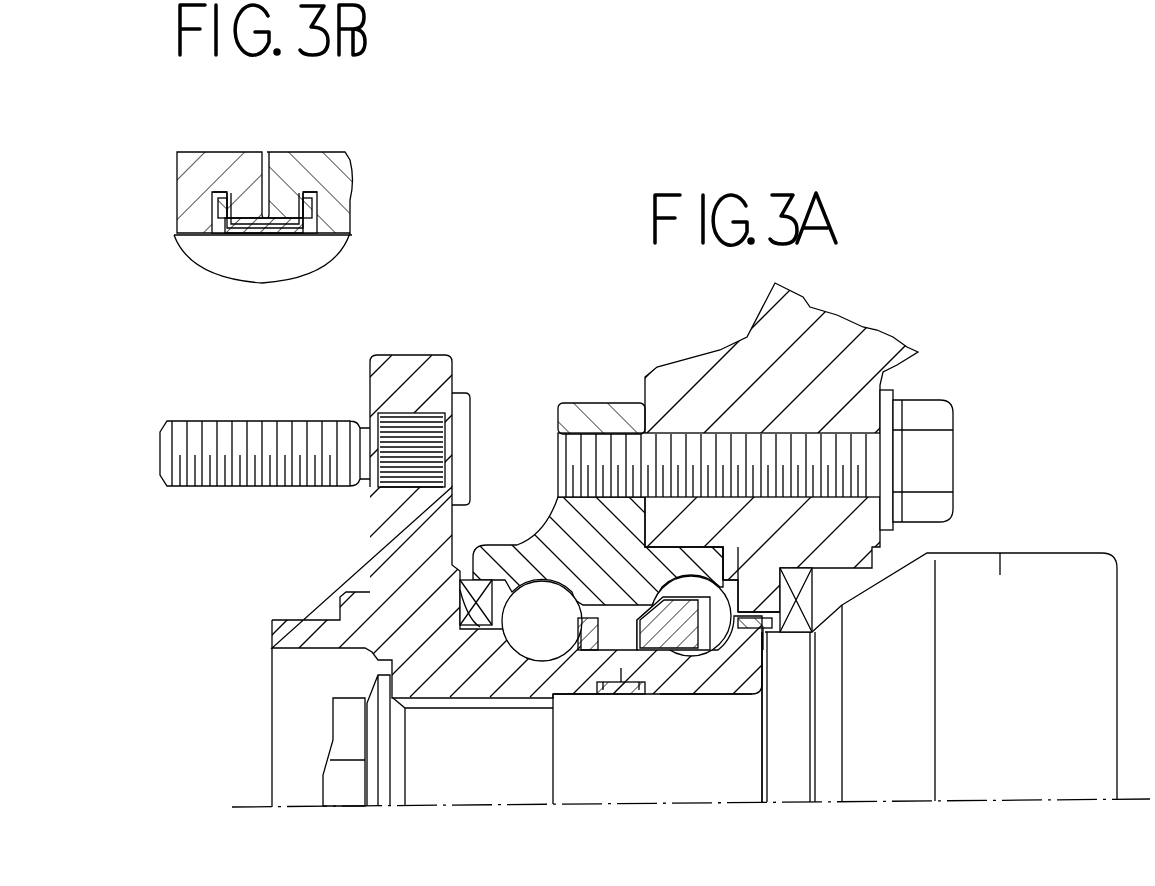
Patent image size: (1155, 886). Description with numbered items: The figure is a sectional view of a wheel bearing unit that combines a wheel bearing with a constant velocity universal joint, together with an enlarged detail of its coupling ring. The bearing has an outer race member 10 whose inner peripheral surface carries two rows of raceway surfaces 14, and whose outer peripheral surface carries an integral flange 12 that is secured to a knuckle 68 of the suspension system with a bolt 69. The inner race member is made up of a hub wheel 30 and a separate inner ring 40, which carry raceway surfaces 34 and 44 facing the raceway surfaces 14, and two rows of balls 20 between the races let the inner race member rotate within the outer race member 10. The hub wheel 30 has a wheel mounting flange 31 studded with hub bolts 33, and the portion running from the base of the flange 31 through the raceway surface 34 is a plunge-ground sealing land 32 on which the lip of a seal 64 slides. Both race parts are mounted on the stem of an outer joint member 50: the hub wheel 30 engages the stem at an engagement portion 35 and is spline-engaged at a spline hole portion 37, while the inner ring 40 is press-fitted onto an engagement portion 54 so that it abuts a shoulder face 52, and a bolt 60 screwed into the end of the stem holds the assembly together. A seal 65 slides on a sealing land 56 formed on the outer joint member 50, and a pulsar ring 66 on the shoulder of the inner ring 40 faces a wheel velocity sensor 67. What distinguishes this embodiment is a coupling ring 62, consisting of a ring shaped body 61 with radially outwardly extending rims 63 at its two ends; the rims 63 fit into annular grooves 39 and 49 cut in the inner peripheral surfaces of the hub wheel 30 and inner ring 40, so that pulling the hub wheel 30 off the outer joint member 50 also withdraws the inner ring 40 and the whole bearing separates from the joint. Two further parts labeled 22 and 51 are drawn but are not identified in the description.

In FIG. 3A, the outer race member 10 is at (530, 530).
In FIG. 3A, the flange 12 is at (590, 405).
In FIG. 3A, the raceway surfaces 14 is at (630, 560).
In FIG. 3A, the balls 20 is at (560, 638).
In FIG. 3A, the spacer ring 22 is at (637, 630).
In FIG. 3A, the hub wheel 30 is at (268, 630).
In FIG. 3B, the hub wheel 30 is at (218, 152).
In FIG. 3A, the wheel mounting flange 31 is at (422, 358).
In FIG. 3A, the sealing land 32 is at (463, 627).
In FIG. 3A, the hub bolts 33 is at (267, 430).
In FIG. 3A, the raceway surface 34 is at (440, 697).
In FIG. 3A, the engagement portion 35 is at (580, 697).
In FIG. 3A, the spline hole portion 37 is at (447, 693).
In FIG. 3B, the annular groove 39 is at (210, 212).
In FIG. 3A, the inner ring 40 is at (757, 655).
In FIG. 3B, the inner ring 40 is at (312, 152).
In FIG. 3A, the raceway surface 44 is at (683, 662).
In FIG. 3B, the annular groove 49 is at (316, 215).
In FIG. 3A, the outer joint member 50 is at (1075, 553).
In FIG. 3B, the outer joint member 50 is at (200, 258).
In FIG. 3A, the hub flange 51 is at (1010, 565).
In FIG. 3A, the shoulder face 52 is at (765, 640).
In FIG. 3A, the engagement portion 54 is at (732, 685).
In FIG. 3A, the sealing land 56 is at (800, 635).
In FIG. 3A, the bolt 60 is at (340, 742).
In FIG. 3B, the ring shaped body 61 is at (262, 228).
In FIG. 3A, the coupling ring 62 is at (620, 697).
In FIG. 3B, the coupling ring 62 is at (282, 230).
In FIG. 3B, the rims 63 is at (215, 198).
In FIG. 3A, the seal 64 is at (477, 623).
In FIG. 3A, the seal 65 is at (808, 600).
In FIG. 3A, the pulsar ring 66 is at (752, 608).
In FIG. 3A, the wheel velocity sensor 67 is at (775, 550).
In FIG. 3A, the knuckle 68 is at (725, 350).
In FIG. 3A, the bolt 69 is at (935, 410).